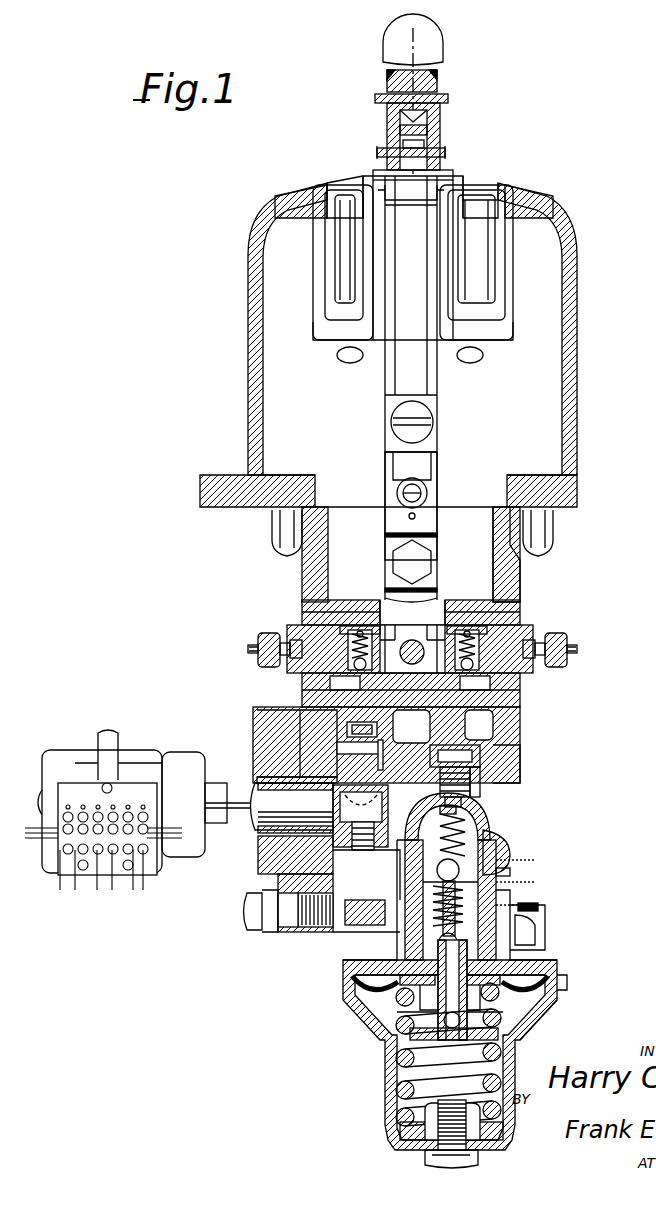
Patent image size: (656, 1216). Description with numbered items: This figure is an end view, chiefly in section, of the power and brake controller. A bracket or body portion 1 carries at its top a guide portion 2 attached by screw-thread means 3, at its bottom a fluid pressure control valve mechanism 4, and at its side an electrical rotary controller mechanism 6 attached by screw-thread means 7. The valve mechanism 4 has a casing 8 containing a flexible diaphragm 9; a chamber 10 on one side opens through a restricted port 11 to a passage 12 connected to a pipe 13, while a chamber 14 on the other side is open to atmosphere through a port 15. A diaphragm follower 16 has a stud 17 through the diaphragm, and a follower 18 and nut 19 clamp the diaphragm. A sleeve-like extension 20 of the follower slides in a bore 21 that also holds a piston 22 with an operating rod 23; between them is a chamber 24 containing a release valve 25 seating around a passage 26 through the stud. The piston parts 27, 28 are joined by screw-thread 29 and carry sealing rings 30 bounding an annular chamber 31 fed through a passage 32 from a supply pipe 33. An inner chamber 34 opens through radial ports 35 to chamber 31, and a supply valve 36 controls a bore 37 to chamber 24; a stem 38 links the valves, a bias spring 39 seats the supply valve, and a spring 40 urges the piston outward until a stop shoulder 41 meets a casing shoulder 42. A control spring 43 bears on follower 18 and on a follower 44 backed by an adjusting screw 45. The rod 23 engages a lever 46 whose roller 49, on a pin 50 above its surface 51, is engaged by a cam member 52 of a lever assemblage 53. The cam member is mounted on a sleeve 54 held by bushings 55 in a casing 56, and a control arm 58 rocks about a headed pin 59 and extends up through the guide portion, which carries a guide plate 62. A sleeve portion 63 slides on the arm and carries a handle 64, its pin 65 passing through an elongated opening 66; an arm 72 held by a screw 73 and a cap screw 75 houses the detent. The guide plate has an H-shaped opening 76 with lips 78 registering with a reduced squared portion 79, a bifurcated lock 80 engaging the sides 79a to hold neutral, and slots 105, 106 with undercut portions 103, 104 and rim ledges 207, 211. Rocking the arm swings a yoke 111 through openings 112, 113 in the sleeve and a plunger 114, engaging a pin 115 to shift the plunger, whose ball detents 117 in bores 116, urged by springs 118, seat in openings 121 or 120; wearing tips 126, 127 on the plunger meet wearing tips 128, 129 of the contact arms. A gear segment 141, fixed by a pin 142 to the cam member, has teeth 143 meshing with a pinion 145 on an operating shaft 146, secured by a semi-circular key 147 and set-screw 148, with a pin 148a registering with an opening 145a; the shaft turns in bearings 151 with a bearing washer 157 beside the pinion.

The body portion 1 is at (531, 579).
The guide portion 2 is at (412, 30).
The screw-thread means 3 is at (320, 165).
The fluid pressure control valve mechanism 4 is at (330, 989).
The electrical rotary controller mechanism 6 is at (187, 742).
The screw-thread means 7 is at (252, 905).
The casing 8 is at (490, 1035).
The flexible diaphragm 9 is at (530, 1008).
The chamber 10 is at (548, 990).
The restricted port 11 is at (520, 930).
The passage 12 is at (535, 920).
The pipe 13 is at (510, 910).
The chamber 14 is at (400, 1075).
The port 15 is at (425, 1110).
The diaphragm follower 16 is at (400, 965).
The screw-threaded stud 17 is at (385, 1010).
The follower 18 is at (380, 985).
The nut 19 is at (395, 1000).
The sleeve-like extension 20 is at (535, 965).
The bore 21 is at (440, 935).
The piston 22 is at (500, 835).
The operating rod 23 is at (490, 800).
The chamber 24 is at (432, 905).
The release valve 25 is at (345, 975).
The passage 26 is at (505, 1035).
The piston part 27 is at (430, 873).
The piston part 28 is at (395, 905).
The screw-thread 29 is at (400, 885).
The sealing ring 30 is at (495, 850).
The annular chamber 31 is at (462, 868).
The passage 32 is at (505, 873).
The fluid pressure supply pipe 33 is at (535, 885).
The chamber 34 is at (465, 825).
The radial port 35 is at (430, 890).
The supply valve 36 is at (530, 870).
The bore 37 is at (525, 905).
The stem 38 is at (545, 978).
The bias spring 39 is at (440, 800).
The spring 40 is at (365, 915).
The stop shoulder 41 is at (370, 835).
The shoulder 42 is at (438, 812).
The control spring 43 is at (400, 1055).
The follower 44 is at (420, 1130).
The adjusting screw 45 is at (440, 1140).
The lever 46 is at (460, 785).
The roller 49 is at (482, 770).
The pin 50 is at (480, 757).
The surface 51 is at (495, 745).
The cam member 52 is at (479, 727).
The lever assemblage 53 is at (446, 476).
The sleeve 54 is at (305, 612).
The bushings 55 is at (320, 603).
The casing 56 is at (518, 592).
The control arm 58 is at (437, 125).
The headed screw-thread pin 59 is at (422, 562).
The guide plate 62 is at (520, 196).
The sleeve portion 63 is at (422, 383).
The handle 64 is at (438, 85).
The pin 65 is at (402, 152).
The elongated opening 66 is at (420, 142).
The arm 72 is at (403, 468).
The screw 73 is at (398, 494).
The cap screw 75 is at (405, 435).
The H-shaped slotted opening 76 is at (313, 275).
The lips 78 is at (442, 190).
The reduced squared portion 79 is at (420, 193).
The outwardly facing sides 79a is at (411, 227).
The bifurcated lock 80 is at (505, 246).
The undercut portion 103 is at (455, 283).
The undercut portion 104 is at (460, 270).
The slot 105 is at (335, 255).
The slot 106 is at (500, 278).
The yoke 111 is at (409, 725).
The opening 112 is at (500, 612).
The opening 113 is at (445, 635).
The plunger 114 is at (458, 631).
The pin 115 is at (412, 640).
The diametric bore 116 is at (333, 625).
The ball-shaped detent 117 is at (352, 630).
The spring 118 is at (370, 635).
The openings 120 is at (330, 680).
The openings 121 is at (320, 700).
The wearing tip 126 is at (290, 632).
The wearing tip 127 is at (570, 640).
The wearing tip 128 is at (250, 648).
The wearing tip 129 is at (578, 652).
The gear segment 141 is at (262, 712).
The pin 142 is at (270, 722).
The teeth 143 is at (265, 742).
The pinion 145 is at (275, 760).
The opening 145a is at (385, 758).
The operating shaft 146 is at (255, 825).
The semi-circular key 147 is at (340, 797).
The set-screw 148 is at (265, 822).
The pin 148a is at (378, 735).
The bearings 151 is at (375, 755).
The bearing washer 157 is at (262, 862).
The ledge 207 is at (365, 183).
The ledge 211 is at (483, 203).